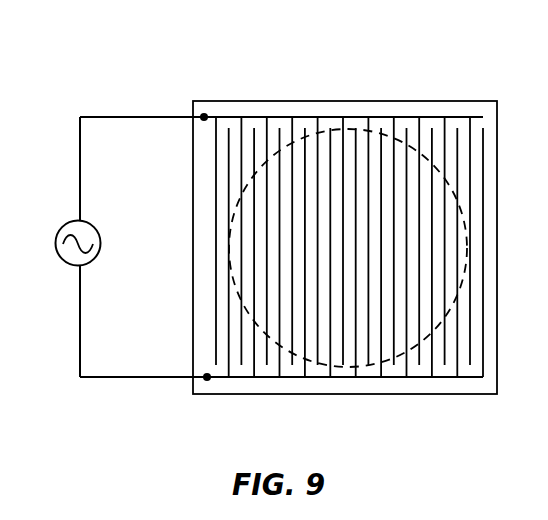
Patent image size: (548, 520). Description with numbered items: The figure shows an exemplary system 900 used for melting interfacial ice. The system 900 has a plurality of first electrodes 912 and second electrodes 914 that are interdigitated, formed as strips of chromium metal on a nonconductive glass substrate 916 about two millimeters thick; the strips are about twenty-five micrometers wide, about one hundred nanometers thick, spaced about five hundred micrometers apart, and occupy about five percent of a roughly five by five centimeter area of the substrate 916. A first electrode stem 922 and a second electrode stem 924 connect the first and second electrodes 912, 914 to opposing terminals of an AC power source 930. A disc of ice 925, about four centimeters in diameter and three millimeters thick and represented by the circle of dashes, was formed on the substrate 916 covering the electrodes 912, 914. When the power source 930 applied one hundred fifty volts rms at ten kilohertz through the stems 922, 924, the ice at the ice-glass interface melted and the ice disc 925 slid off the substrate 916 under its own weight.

The system 900 is at (200, 40).
The first electrodes 912 is at (215, 150).
The second electrodes 914 is at (228, 187).
The nonconductive glass substrate 916 is at (446, 104).
The first electrode stem 922 is at (125, 117).
The second electrode stem 924 is at (129, 379).
The ice disc 925 is at (397, 377).
The AC power source 930 is at (60, 235).